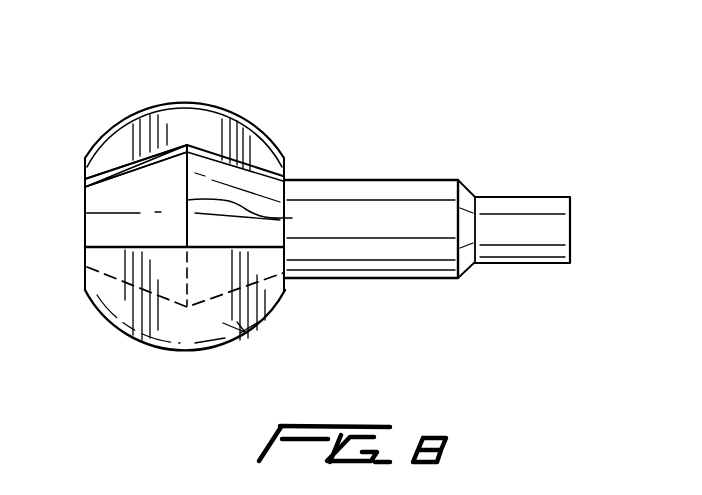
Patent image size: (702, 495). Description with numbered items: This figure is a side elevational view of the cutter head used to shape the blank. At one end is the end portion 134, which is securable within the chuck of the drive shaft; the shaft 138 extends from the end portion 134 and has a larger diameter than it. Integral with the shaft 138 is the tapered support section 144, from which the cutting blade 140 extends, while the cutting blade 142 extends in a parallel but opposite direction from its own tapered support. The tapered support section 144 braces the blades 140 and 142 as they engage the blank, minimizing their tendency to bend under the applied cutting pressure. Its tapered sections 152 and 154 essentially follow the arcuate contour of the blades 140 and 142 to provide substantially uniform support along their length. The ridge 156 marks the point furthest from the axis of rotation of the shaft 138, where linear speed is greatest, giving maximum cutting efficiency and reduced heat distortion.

The end portion 134 is at (510, 208).
The shaft 138 is at (372, 191).
The cutting blade 140 is at (176, 164).
The cutting blade 142 is at (227, 323).
The tapered support section 144 is at (262, 184).
The tapered section 152 is at (118, 165).
The tapered section 154 is at (240, 160).
The ridge 156 is at (215, 169).